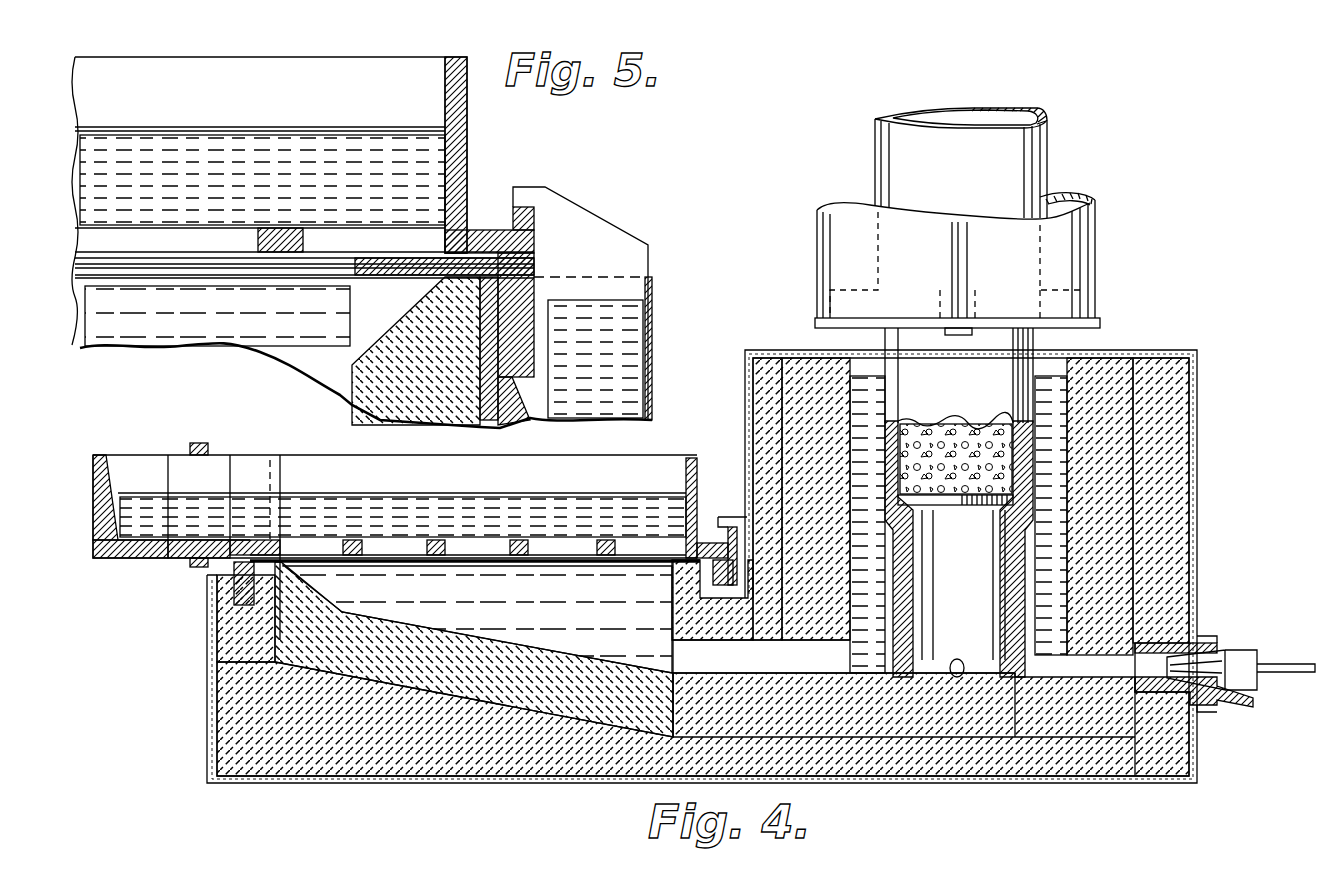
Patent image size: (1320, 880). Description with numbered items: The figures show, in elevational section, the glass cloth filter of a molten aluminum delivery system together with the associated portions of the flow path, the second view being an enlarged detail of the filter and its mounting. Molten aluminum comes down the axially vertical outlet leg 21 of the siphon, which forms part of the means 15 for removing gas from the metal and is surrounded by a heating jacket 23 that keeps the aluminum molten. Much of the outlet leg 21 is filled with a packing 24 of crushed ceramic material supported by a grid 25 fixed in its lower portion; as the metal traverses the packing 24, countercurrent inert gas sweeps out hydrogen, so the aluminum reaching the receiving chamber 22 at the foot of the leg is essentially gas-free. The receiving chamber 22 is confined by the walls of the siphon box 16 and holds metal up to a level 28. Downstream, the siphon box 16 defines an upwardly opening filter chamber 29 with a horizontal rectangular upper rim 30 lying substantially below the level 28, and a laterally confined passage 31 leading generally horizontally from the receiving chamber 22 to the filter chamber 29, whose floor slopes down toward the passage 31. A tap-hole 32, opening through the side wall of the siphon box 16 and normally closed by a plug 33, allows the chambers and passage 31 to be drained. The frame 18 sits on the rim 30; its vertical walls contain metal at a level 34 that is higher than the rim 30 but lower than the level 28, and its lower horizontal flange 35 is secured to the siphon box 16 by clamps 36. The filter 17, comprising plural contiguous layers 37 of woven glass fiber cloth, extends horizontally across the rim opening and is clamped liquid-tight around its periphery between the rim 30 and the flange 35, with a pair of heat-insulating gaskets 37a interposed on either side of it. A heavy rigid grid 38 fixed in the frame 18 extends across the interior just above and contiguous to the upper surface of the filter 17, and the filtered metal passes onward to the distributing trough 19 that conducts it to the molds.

In FIG. 4, the means for removing gas 15 is at (858, 170).
In FIG. 5, the siphon box 16 is at (387, 403).
In FIG. 4, the siphon box 16 is at (1194, 478).
In FIG. 5, the filter 17 is at (239, 282).
In FIG. 4, the filter 17 is at (494, 563).
In FIG. 5, the frame 18 is at (455, 57).
In FIG. 4, the frame 18 is at (692, 458).
In FIG. 4, the distributing trough 19 is at (118, 480).
In FIG. 4, the outlet leg 21 is at (1035, 161).
In FIG. 4, the receiving chamber 22 is at (860, 375).
In FIG. 4, the heating jacket 23 is at (1093, 212).
In FIG. 4, the packing 24 is at (967, 433).
In FIG. 4, the grid 25 is at (960, 510).
In FIG. 4, the level 28 is at (1052, 379).
In FIG. 5, the filter chamber 29 is at (362, 353).
In FIG. 4, the filter chamber 29 is at (413, 622).
In FIG. 5, the upper rim 30 is at (497, 347).
In FIG. 4, the upper rim 30 is at (302, 560).
In FIG. 4, the passage 31 is at (765, 675).
In FIG. 4, the tap-hole 32 is at (1145, 663).
In FIG. 4, the plug 33 is at (1215, 690).
In FIG. 5, the level 34 is at (197, 128).
In FIG. 4, the level 34 is at (343, 492).
In FIG. 5, the flange 35 is at (487, 228).
In FIG. 4, the flange 35 is at (710, 542).
In FIG. 5, the clamps 36 is at (637, 258).
In FIG. 4, the clamps 36 is at (740, 518).
In FIG. 5, the layers 37 is at (80, 278).
In FIG. 5, the gaskets 37a is at (522, 245).
In FIG. 5, the grid 38 is at (282, 228).
In FIG. 4, the grid 38 is at (515, 540).